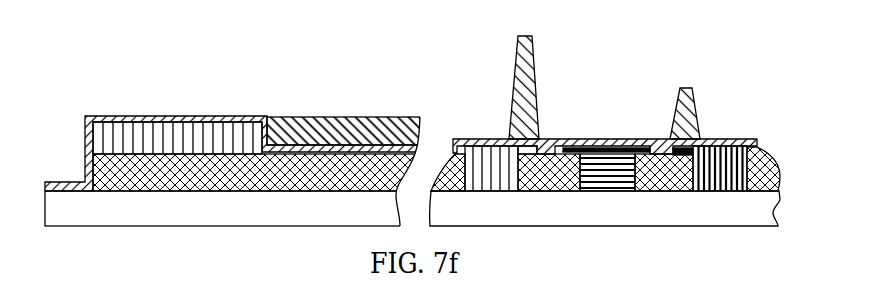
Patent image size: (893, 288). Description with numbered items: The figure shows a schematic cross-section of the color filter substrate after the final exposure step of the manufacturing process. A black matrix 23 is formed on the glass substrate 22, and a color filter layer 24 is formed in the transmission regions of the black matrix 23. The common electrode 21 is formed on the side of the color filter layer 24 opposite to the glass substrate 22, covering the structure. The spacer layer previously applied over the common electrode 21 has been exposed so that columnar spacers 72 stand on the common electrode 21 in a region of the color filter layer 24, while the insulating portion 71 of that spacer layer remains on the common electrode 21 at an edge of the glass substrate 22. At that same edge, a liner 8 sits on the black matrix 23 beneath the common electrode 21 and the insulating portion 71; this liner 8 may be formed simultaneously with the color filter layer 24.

The liner 8 is at (112, 137).
The common electrode 21 is at (422, 148).
The glass substrate 22 is at (85, 213).
The black matrix 23 is at (100, 168).
The color filter layer 24 is at (735, 172).
The insulating portion 71 is at (378, 130).
The columnar spacers 72 is at (537, 95).